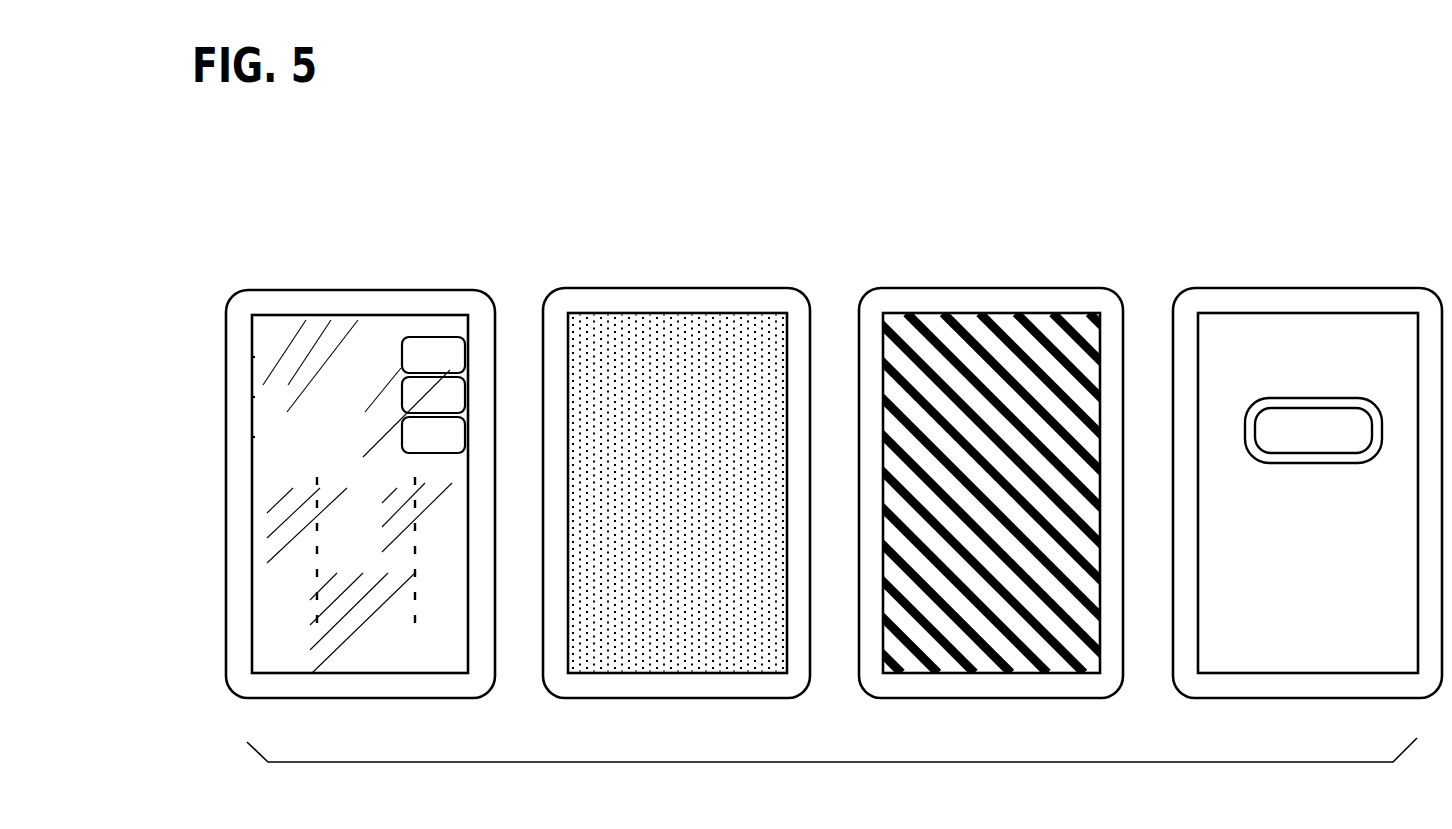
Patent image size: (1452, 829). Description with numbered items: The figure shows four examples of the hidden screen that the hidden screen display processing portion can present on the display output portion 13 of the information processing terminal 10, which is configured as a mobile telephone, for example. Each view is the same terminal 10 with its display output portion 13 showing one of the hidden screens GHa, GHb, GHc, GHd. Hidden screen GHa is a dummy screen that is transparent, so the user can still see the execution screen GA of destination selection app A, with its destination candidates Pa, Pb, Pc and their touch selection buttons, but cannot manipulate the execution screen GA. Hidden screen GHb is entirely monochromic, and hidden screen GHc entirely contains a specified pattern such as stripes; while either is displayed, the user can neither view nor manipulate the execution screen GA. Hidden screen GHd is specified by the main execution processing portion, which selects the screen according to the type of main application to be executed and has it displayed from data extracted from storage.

The information processing terminal 10 is at (272, 290).
The display output portion 13 is at (430, 315).
The execution screen GA is at (312, 334).
The hidden screen GHa is at (374, 334).
The hidden screen GHb is at (655, 311).
The hidden screen GHc is at (995, 330).
The hidden screen GHd is at (1306, 336).